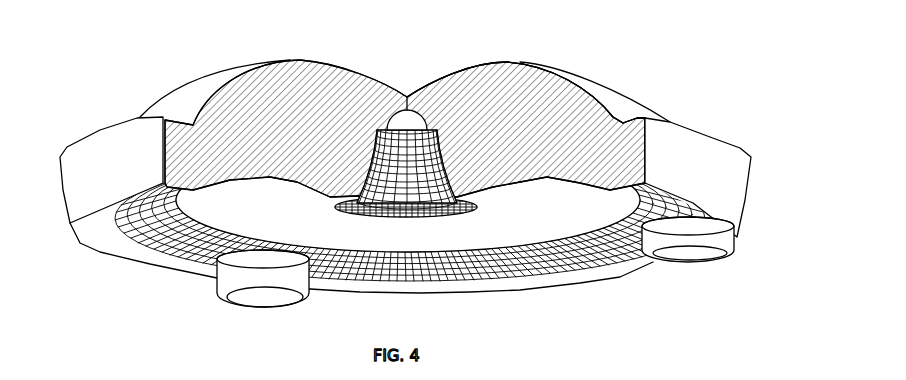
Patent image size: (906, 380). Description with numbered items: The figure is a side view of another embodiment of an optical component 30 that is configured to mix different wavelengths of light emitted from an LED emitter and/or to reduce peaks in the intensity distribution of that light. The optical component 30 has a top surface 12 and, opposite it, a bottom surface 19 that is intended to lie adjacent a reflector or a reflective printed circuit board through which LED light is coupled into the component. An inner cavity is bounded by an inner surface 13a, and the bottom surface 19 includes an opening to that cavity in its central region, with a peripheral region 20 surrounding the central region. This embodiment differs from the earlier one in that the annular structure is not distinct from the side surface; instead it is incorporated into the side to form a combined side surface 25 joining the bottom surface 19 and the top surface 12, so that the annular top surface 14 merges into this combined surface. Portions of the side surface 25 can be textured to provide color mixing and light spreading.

The optical component 30 is at (108, 60).
The top surface 12 is at (203, 92).
The top surface of annular structure 14 is at (637, 120).
The combined side surface 25 is at (697, 157).
The inner surface 13a is at (463, 212).
The bottom surface 19 is at (400, 235).
The peripheral region 20 is at (188, 265).